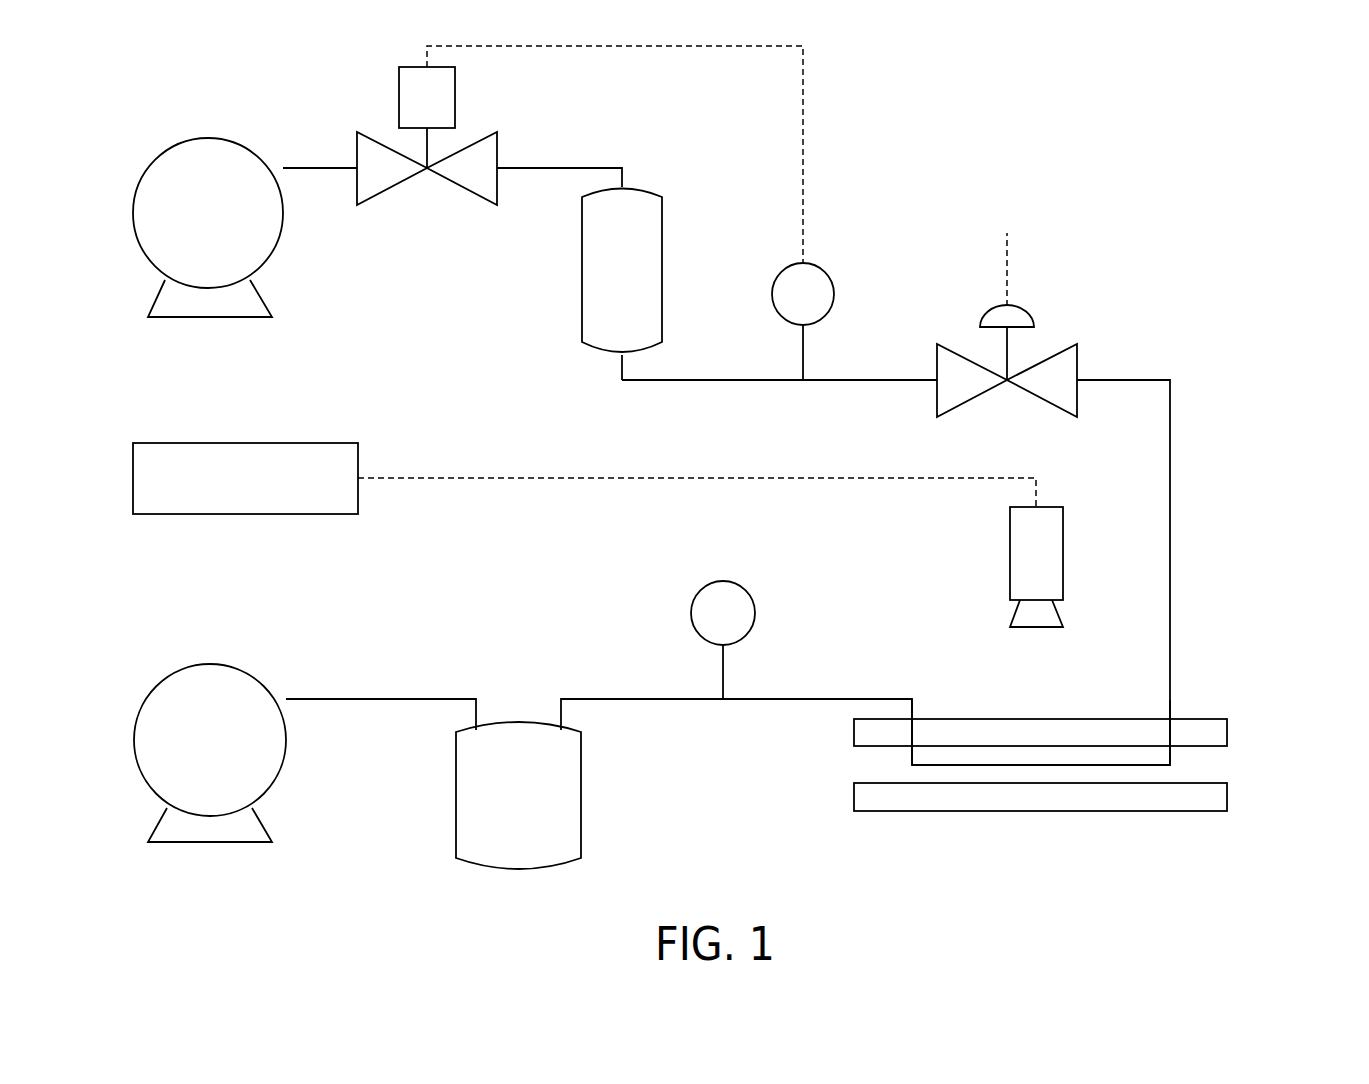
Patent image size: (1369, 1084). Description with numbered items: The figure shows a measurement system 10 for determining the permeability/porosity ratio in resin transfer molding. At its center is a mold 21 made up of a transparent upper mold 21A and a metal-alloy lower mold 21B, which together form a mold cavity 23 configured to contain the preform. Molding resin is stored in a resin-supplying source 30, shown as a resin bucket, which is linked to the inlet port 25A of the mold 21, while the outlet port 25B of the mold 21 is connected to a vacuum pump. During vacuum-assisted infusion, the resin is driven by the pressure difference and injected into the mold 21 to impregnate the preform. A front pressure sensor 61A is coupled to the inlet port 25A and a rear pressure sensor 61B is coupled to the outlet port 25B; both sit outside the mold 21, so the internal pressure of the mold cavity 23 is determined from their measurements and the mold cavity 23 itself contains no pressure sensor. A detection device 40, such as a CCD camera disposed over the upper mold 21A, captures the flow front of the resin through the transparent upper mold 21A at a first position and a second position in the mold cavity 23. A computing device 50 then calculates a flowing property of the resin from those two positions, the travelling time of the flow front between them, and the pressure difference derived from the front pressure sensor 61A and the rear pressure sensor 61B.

The measurement system 10 is at (82, 67).
The resin-supplying source 30 is at (662, 225).
The front pressure sensor 61A is at (826, 272).
The rear pressure sensor 61B is at (748, 591).
The computing device 50 is at (246, 443).
The detection device 40 is at (1074, 536).
The mold 21 is at (1310, 724).
The upper mold 21A is at (1215, 733).
The lower mold 21B is at (1215, 798).
The mold cavity 23 is at (1195, 767).
The inlet port 25A is at (1171, 717).
The outlet port 25B is at (913, 717).